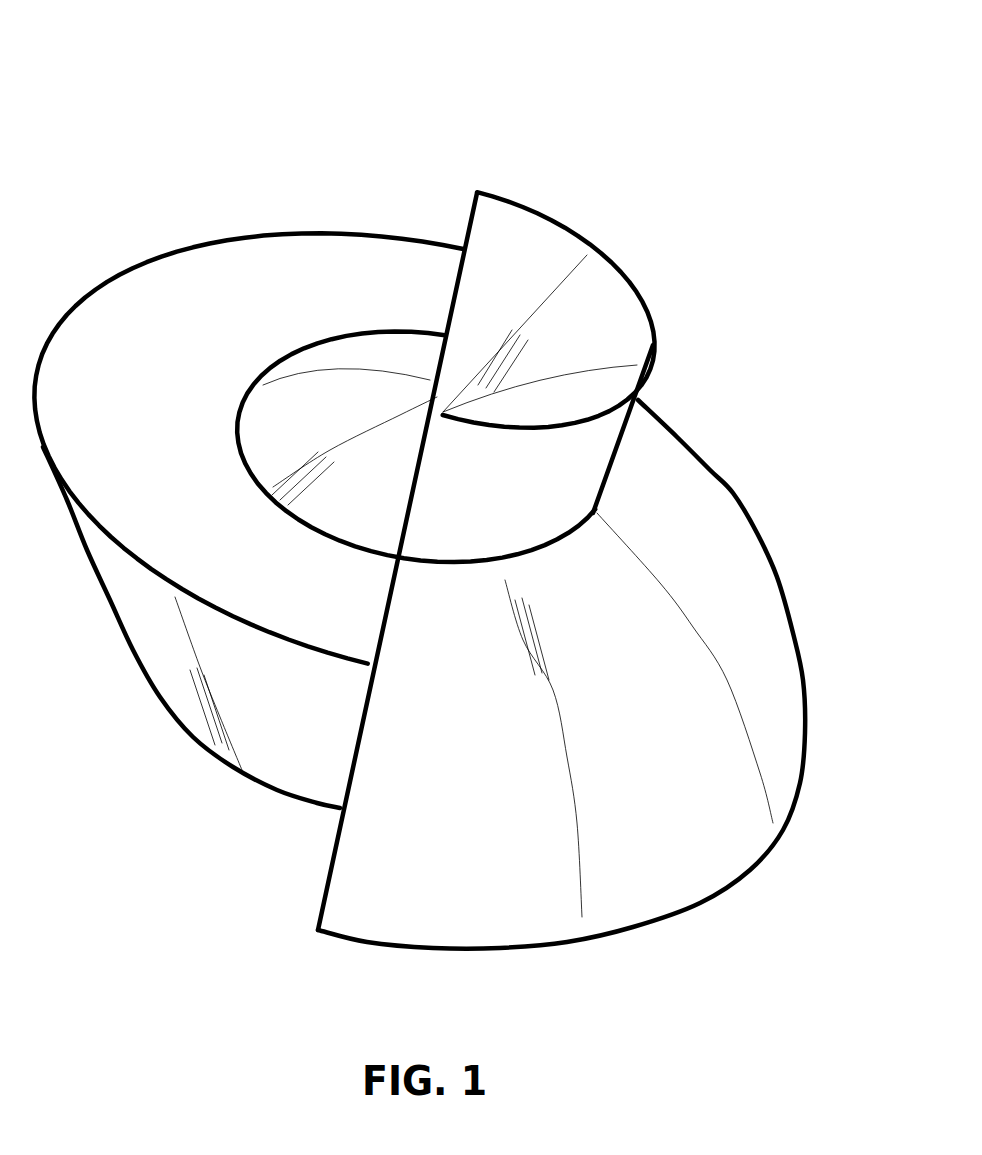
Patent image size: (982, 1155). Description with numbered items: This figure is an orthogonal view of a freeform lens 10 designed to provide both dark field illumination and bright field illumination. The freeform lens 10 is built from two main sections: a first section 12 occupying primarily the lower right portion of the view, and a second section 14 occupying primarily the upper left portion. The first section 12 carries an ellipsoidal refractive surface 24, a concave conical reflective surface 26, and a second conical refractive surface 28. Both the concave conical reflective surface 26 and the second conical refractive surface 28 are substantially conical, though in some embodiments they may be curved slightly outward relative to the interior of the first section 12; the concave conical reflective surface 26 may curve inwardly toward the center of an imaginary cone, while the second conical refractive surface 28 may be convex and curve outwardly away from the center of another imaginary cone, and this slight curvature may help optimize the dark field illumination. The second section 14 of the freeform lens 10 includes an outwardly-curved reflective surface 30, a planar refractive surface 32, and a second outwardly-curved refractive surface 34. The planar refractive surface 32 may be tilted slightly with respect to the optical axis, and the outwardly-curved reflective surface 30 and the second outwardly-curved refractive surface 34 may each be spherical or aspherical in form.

The freeform lens 10 is at (650, 145).
The first section 12 is at (730, 490).
The second section 14 is at (258, 233).
The ellipsoidal refractive surface 24 is at (745, 598).
The concave conical reflective surface 26 is at (597, 320).
The second conical refractive surface 28 is at (565, 475).
The outwardly-curved reflective surface 30 is at (147, 640).
The planar refractive surface 32 is at (168, 297).
The second outwardly-curved refractive surface 34 is at (270, 420).